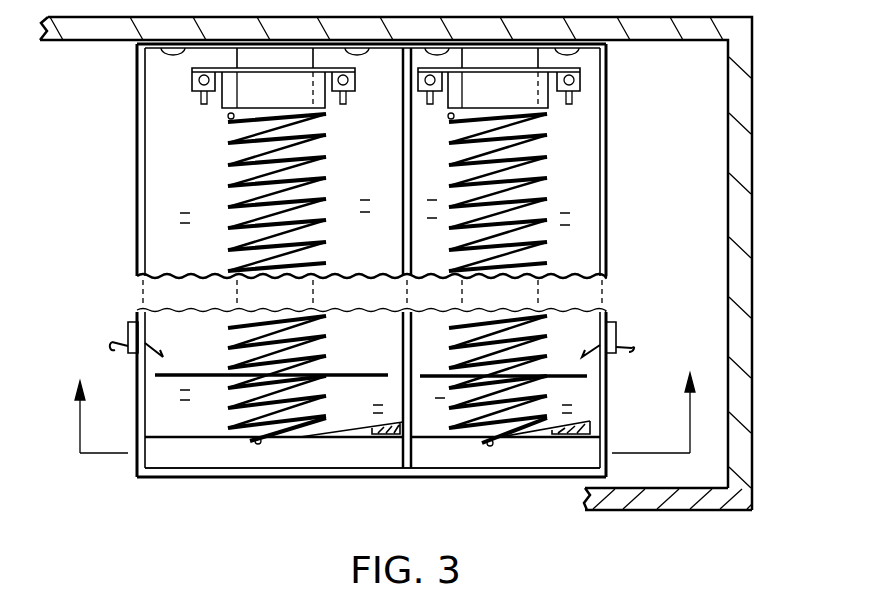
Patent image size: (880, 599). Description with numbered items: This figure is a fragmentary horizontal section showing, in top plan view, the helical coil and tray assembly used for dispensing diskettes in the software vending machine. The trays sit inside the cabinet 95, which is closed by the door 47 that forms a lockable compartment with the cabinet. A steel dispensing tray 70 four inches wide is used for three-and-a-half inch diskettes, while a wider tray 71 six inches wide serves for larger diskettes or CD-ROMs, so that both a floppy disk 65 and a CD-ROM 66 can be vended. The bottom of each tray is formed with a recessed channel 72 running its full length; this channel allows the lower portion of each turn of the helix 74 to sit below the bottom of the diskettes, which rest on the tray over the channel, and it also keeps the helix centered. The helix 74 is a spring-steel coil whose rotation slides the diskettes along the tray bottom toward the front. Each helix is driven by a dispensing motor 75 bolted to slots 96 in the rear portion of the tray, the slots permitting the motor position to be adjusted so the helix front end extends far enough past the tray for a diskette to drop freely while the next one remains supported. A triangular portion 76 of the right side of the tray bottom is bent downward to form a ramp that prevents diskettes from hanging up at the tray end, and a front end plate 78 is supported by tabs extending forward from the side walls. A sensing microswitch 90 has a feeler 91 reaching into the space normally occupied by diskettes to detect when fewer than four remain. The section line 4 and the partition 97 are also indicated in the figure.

The section line 4- 4 is at (380, 413).
The door 47 is at (677, 500).
The floppy disk 65 is at (443, 440).
The CD-ROM 66 is at (217, 375).
The dispensing tray 70 is at (608, 60).
The tray 71 is at (190, 55).
The recessed channel 72 is at (233, 157).
The helix 74 is at (232, 230).
The dispensing motor 75 is at (250, 97).
The triangular portion 76 is at (375, 430).
The front end plate 78 is at (237, 477).
The sensing microswitch 90 is at (128, 330).
The feeler 91 is at (140, 362).
The cabinet 95 is at (742, 40).
The slots 96 is at (350, 102).
The partition 97 is at (137, 461).